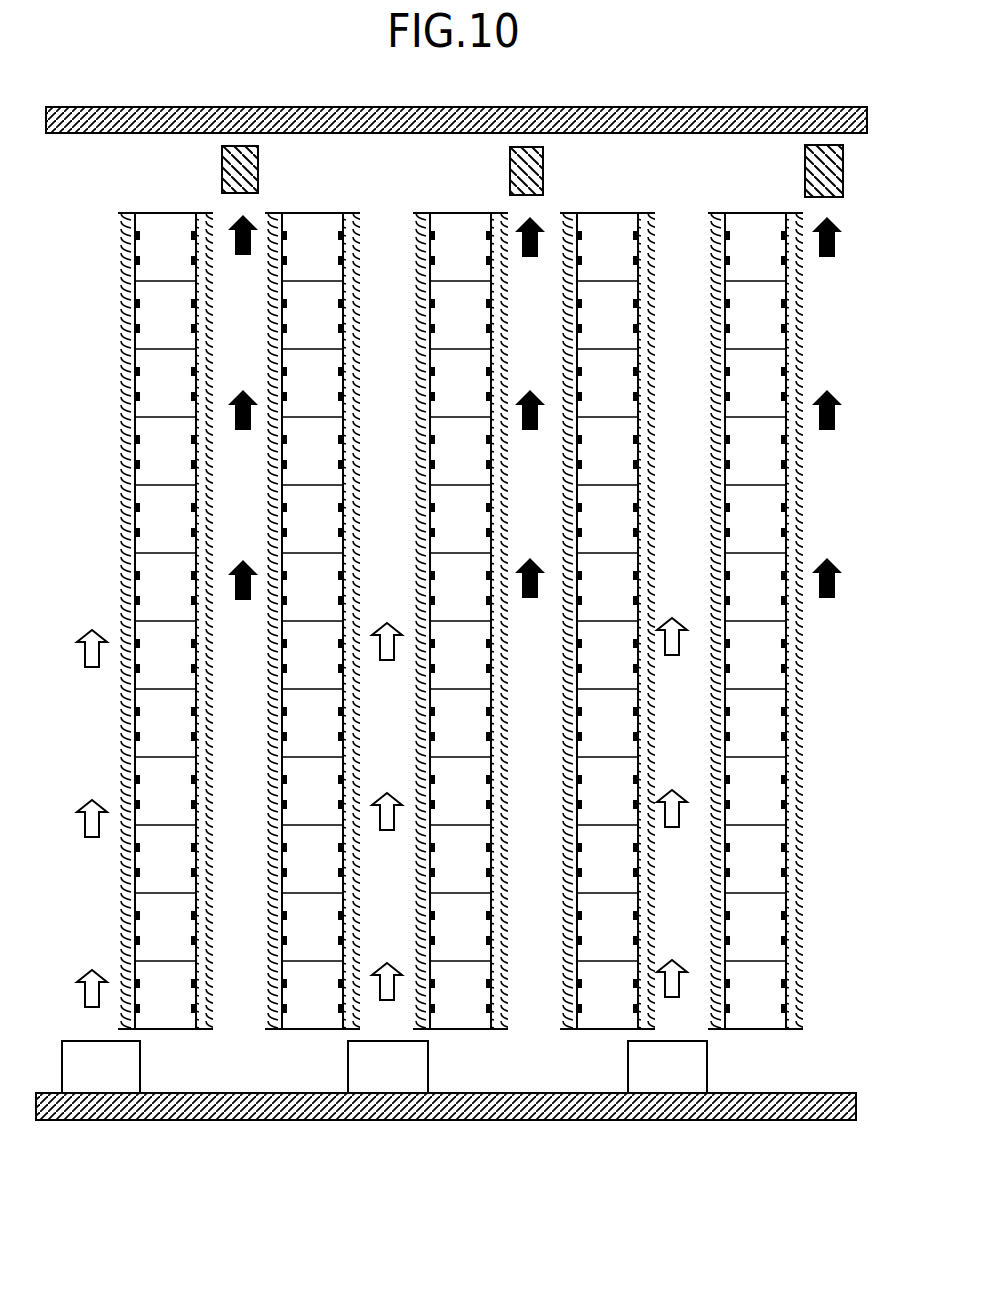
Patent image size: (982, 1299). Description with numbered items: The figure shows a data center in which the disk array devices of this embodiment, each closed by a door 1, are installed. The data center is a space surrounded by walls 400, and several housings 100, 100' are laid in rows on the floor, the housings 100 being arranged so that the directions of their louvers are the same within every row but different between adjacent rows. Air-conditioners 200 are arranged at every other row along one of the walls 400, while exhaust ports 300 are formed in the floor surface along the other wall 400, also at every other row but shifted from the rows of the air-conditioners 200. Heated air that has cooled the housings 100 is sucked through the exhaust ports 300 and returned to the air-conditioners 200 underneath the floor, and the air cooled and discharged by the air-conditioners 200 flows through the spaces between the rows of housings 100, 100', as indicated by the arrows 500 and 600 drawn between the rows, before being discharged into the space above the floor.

The door 1 is at (678, 245).
The housing 100 is at (460, 621).
The rack (storage shelf) 100' is at (460, 651).
The air-conditioner 200 is at (103, 1073).
The exhaust port 300 is at (510, 170).
The wall 400 is at (115, 134).
The travel direction (open arrow) 500 is at (672, 827).
The travel direction (solid arrow) 600 is at (530, 600).